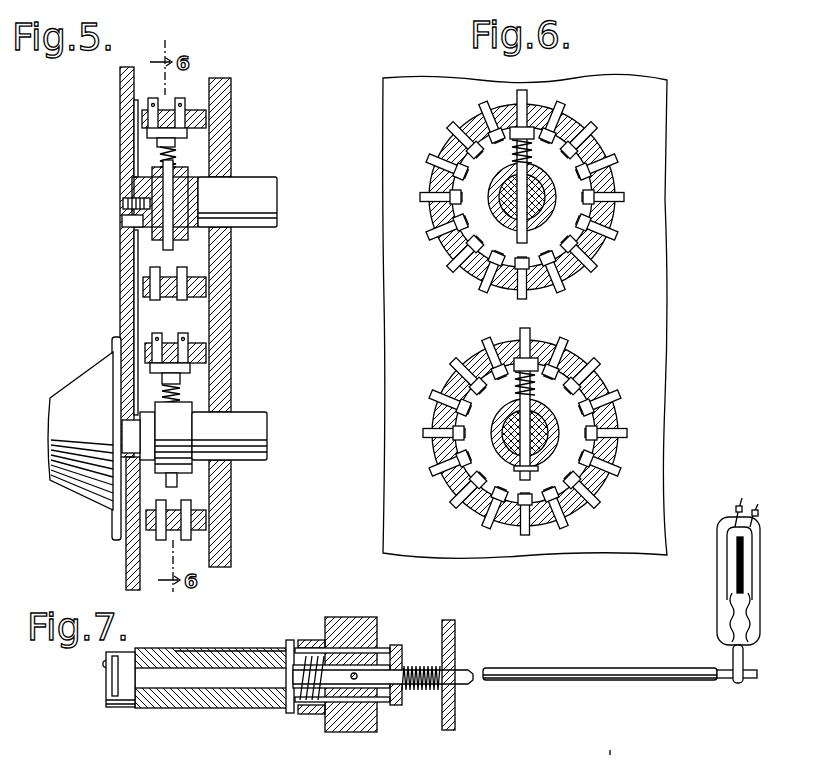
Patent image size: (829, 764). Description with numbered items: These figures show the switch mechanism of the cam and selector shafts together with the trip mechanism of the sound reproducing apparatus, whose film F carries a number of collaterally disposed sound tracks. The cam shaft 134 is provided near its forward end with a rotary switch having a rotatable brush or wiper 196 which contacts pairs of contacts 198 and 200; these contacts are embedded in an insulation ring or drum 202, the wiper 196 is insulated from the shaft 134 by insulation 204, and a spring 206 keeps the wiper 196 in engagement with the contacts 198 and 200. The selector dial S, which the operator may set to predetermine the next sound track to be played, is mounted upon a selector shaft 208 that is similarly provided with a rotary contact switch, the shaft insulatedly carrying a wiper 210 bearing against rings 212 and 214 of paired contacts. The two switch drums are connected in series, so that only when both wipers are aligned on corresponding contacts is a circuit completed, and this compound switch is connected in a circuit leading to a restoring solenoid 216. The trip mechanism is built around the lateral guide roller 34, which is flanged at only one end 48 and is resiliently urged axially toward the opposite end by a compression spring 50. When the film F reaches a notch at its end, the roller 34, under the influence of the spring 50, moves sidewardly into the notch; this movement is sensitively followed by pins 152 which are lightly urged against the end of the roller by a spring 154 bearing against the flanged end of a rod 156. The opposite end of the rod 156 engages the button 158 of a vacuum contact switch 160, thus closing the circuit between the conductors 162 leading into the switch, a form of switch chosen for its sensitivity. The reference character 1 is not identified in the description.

In FIG. 5, the plate 1 is at (134, 135).
In FIG. 5, the contacts 198 is at (150, 97).
In FIG. 5, the contacts 200 is at (182, 97).
In FIG. 6, the contacts 200 is at (582, 110).
In FIG. 5, the insulation ring or drum 202 is at (200, 113).
In FIG. 5, the rotatable brush or wiper 196 is at (178, 143).
In FIG. 6, the rotatable brush or wiper 196 is at (512, 135).
In FIG. 5, the insulation 204 is at (178, 192).
In FIG. 6, the insulation 204 is at (510, 180).
In FIG. 5, the spring 206 is at (160, 157).
In FIG. 6, the spring 206 is at (532, 152).
In FIG. 5, the cam shaft 134 is at (255, 188).
In FIG. 6, the cam shaft 134 is at (545, 200).
In FIG. 5, the ring of paired contacts 212 is at (155, 335).
In FIG. 5, the ring of paired contacts 214 is at (183, 334).
In FIG. 6, the ring of paired contacts 214 is at (590, 353).
In FIG. 5, the wiper 210 is at (182, 393).
In FIG. 6, the wiper 210 is at (533, 377).
In FIG. 5, the selector shaft 208 is at (245, 423).
In FIG. 6, the selector shaft 208 is at (550, 453).
In FIG. 5, the selector dial S is at (78, 472).
In FIG. 7, the lateral guide roller 34 is at (268, 648).
In FIG. 7, the film F is at (180, 648).
In FIG. 7, the flanged end 48 is at (292, 640).
In FIG. 7, the compression spring 50 is at (290, 690).
In FIG. 7, the pins 152 is at (358, 617).
In FIG. 7, the spring 154 is at (425, 690).
In FIG. 7, the rod 156 is at (555, 680).
In FIG. 7, the button 158 is at (744, 661).
In FIG. 7, the vacuum contact switch 160 is at (720, 587).
In FIG. 7, the conductors 162 is at (760, 512).
In FIG. 7, the restoring solenoid 216 is at (609, 757).